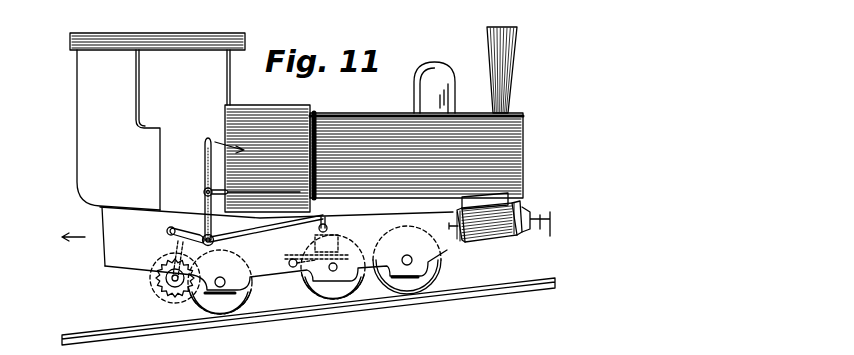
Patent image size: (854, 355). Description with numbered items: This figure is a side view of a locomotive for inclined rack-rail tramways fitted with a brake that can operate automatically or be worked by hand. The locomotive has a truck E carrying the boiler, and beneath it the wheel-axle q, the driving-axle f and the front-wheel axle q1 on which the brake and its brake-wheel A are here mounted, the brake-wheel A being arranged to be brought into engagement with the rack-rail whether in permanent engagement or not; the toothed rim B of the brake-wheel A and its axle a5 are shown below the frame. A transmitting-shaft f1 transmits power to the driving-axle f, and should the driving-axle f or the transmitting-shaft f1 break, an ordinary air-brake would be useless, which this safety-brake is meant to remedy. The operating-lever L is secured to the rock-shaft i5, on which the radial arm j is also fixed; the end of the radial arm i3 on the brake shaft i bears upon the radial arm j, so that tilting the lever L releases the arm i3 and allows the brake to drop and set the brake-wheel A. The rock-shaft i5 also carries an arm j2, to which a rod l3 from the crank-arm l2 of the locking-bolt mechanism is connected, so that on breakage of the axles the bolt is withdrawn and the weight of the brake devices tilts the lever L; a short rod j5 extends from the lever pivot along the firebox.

The truck E is at (257, 161).
The operating-lever L is at (195, 189).
The radial arm j is at (244, 185).
The arm j2 is at (222, 243).
The firebox rod j5 is at (262, 158).
The shaft i is at (177, 232).
The radial arm i3 is at (186, 228).
The rock-shaft i5 is at (268, 221).
The rod l3 is at (273, 235).
The crank-arm l2 is at (316, 242).
The transmitting-shaft f1 is at (328, 251).
The driving-axle f is at (275, 287).
The brake-wheel A is at (156, 279).
The gear teeth B is at (160, 290).
The gear axle a5 is at (176, 281).
The wheel-axle q is at (221, 287).
The front-wheel axle q1 is at (406, 256).